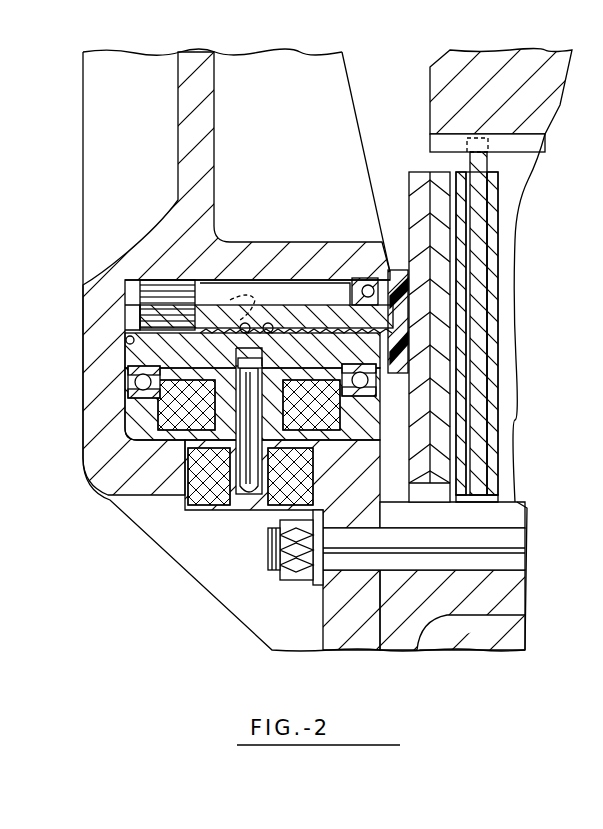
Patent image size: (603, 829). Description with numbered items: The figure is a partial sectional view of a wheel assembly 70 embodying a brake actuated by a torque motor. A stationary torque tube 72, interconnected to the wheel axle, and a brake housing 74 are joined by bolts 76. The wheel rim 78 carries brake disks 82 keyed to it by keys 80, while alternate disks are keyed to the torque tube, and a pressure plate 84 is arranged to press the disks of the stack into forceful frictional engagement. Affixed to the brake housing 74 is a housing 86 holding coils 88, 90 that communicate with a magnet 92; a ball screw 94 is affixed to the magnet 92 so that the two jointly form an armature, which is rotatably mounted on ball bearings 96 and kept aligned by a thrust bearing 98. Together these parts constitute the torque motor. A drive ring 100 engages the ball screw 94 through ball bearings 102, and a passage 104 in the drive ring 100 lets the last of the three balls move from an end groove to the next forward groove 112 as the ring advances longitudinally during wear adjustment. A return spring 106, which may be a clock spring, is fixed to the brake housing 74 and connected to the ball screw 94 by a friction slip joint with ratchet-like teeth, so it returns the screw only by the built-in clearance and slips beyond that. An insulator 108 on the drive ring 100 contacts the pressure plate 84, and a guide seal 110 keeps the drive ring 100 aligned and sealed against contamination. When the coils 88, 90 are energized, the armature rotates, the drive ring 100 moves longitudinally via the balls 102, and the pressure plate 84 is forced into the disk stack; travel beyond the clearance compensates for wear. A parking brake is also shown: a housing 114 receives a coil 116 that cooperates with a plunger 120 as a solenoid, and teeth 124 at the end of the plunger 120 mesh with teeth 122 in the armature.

The wheel assembly 70 is at (105, 573).
The torque tube 72 is at (508, 605).
The brake housing 74 is at (240, 617).
The bolts 76 is at (528, 556).
The wheel rim 78 is at (430, 75).
The keys 80 is at (540, 147).
The brake disks 82 is at (480, 210).
The pressure plate 84 is at (425, 452).
The housing 86 is at (110, 410).
The coil 88 is at (200, 419).
The coil 90 is at (325, 419).
The magnet 92 is at (145, 352).
The ball screw 94 is at (125, 325).
The ball bearings 96 is at (134, 383).
The thrust bearing 98 is at (126, 340).
The drive ring 100 is at (302, 310).
The ball bearings 102 is at (250, 312).
The passage 104 is at (247, 324).
The return spring 106 is at (172, 300).
The insulator 108 is at (392, 272).
The guide seal 110 is at (358, 278).
The groove 112 is at (338, 333).
The housing 114 is at (185, 512).
The coil 116 is at (226, 489).
The plunger 120 is at (256, 497).
The teeth 122 is at (240, 372).
The teeth 124 is at (236, 390).